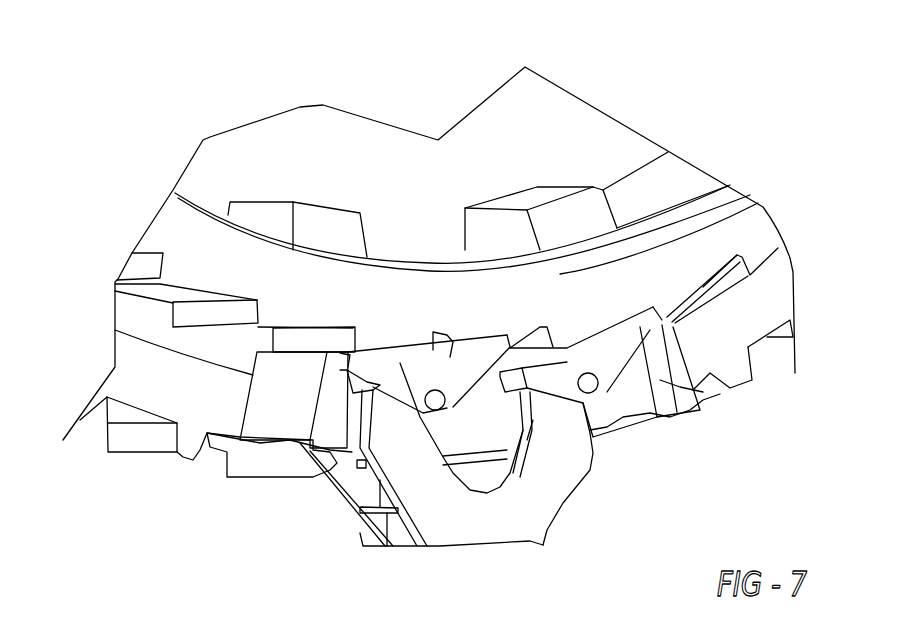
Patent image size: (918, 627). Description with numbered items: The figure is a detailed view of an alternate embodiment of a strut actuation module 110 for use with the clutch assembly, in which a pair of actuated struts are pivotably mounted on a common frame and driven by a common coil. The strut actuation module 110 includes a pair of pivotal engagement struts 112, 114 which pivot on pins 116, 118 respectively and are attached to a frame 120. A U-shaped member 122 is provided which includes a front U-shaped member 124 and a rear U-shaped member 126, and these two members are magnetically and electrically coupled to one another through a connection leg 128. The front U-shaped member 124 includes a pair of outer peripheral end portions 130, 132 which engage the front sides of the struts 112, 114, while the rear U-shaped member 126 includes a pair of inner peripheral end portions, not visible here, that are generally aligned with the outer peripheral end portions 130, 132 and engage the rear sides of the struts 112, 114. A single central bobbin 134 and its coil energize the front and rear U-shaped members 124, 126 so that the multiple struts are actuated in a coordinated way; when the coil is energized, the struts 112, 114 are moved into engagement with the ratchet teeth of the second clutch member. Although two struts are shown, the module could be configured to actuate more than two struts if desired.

The strut actuation module 110 is at (155, 513).
The pivotal engagement strut 112 is at (453, 370).
The pivotal engagement strut 114 is at (623, 347).
The pin 116 is at (440, 403).
The pin 118 is at (590, 387).
The frame 120 is at (312, 492).
The U-shaped member 122 is at (477, 517).
The front U-shaped member 124 is at (440, 547).
The rear U-shaped member 126 is at (360, 533).
The connection leg 128 is at (393, 550).
The outer peripheral end portion 130 is at (400, 363).
The outer peripheral end portion 132 is at (553, 390).
The central bobbin 134 is at (482, 472).